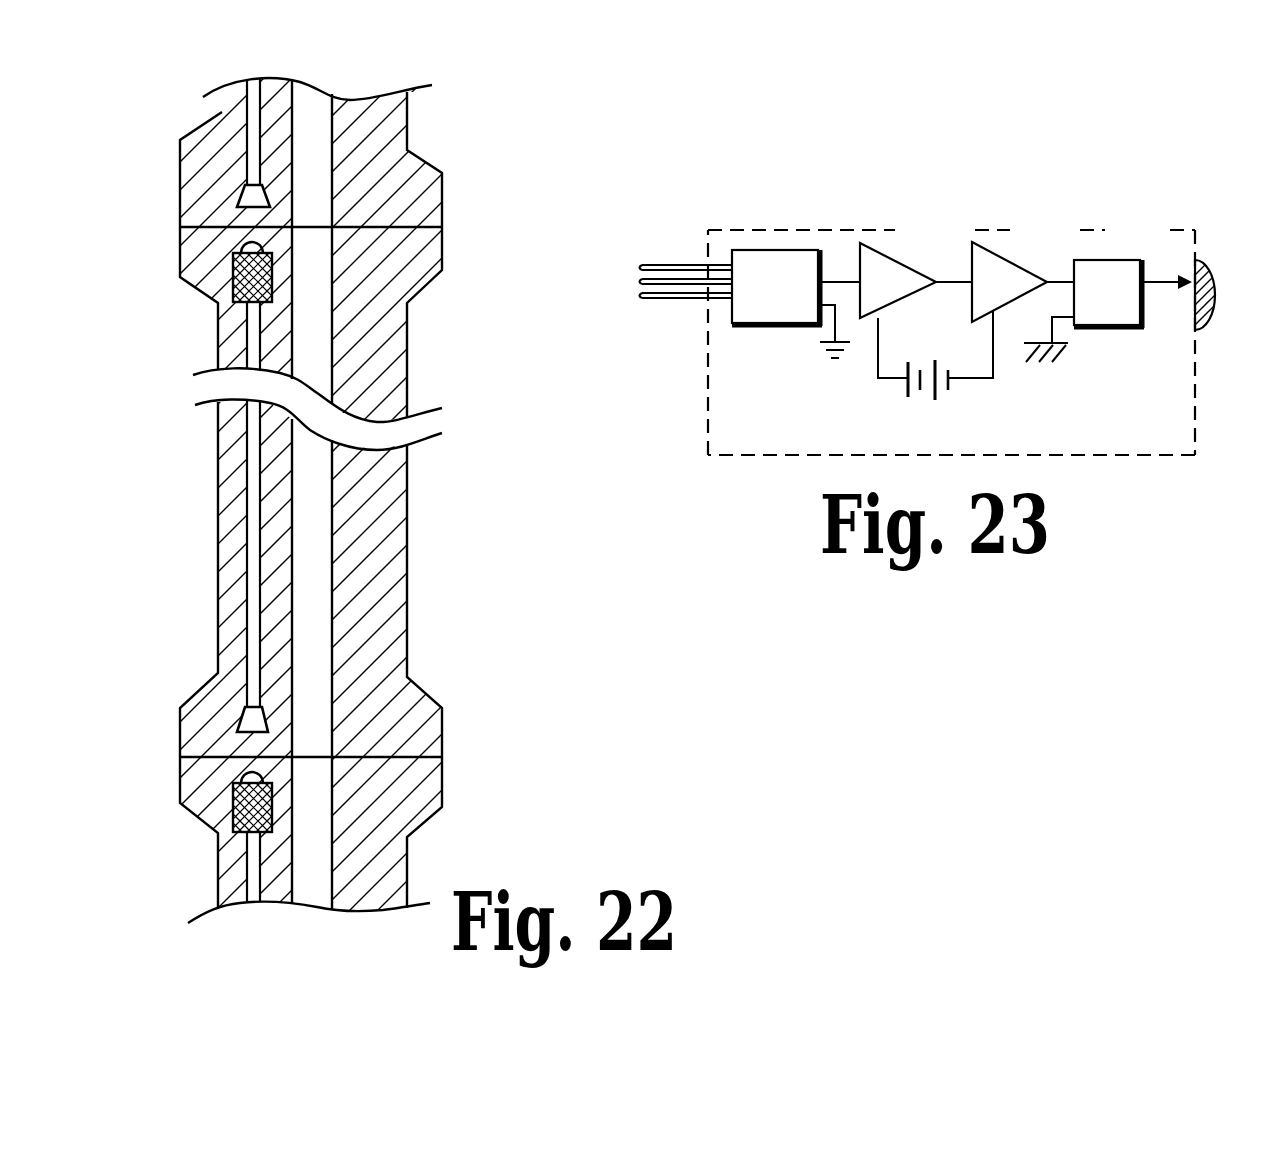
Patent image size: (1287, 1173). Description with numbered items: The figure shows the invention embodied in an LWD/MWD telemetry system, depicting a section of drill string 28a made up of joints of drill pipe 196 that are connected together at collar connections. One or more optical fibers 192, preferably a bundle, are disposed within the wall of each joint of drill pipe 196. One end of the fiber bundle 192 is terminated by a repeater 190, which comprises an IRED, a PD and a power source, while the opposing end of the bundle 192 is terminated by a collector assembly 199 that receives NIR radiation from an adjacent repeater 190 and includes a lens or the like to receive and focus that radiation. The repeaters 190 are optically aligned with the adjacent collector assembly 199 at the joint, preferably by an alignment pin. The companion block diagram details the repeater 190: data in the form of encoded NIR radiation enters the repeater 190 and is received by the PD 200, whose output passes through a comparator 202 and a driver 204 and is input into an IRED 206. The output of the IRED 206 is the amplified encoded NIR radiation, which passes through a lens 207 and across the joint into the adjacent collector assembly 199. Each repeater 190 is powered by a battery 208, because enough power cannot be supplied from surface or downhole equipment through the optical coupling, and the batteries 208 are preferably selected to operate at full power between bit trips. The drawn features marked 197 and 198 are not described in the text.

In FIG. 22, the optical fibers 192 is at (247, 137).
In FIG. 23, the optical fibers 192 is at (674, 300).
In FIG. 22, the collector assembly 199 is at (240, 196).
In FIG. 22, the repeater 190 is at (232, 262).
In FIG. 23, the repeater 190 is at (870, 218).
In FIG. 22, the drill pipe 196 is at (385, 160).
In FIG. 22, the joint between housing sections 197 is at (383, 227).
In FIG. 22, the central bore 198 is at (315, 647).
In FIG. 22, the drill string 28a is at (438, 505).
In FIG. 23, the PD 200 is at (772, 323).
In FIG. 23, the comparator 202 is at (880, 263).
In FIG. 23, the driver 204 is at (990, 259).
In FIG. 23, the IRED 206 is at (1095, 266).
In FIG. 23, the lens 207 is at (1217, 324).
In FIG. 23, the battery 208 is at (936, 398).